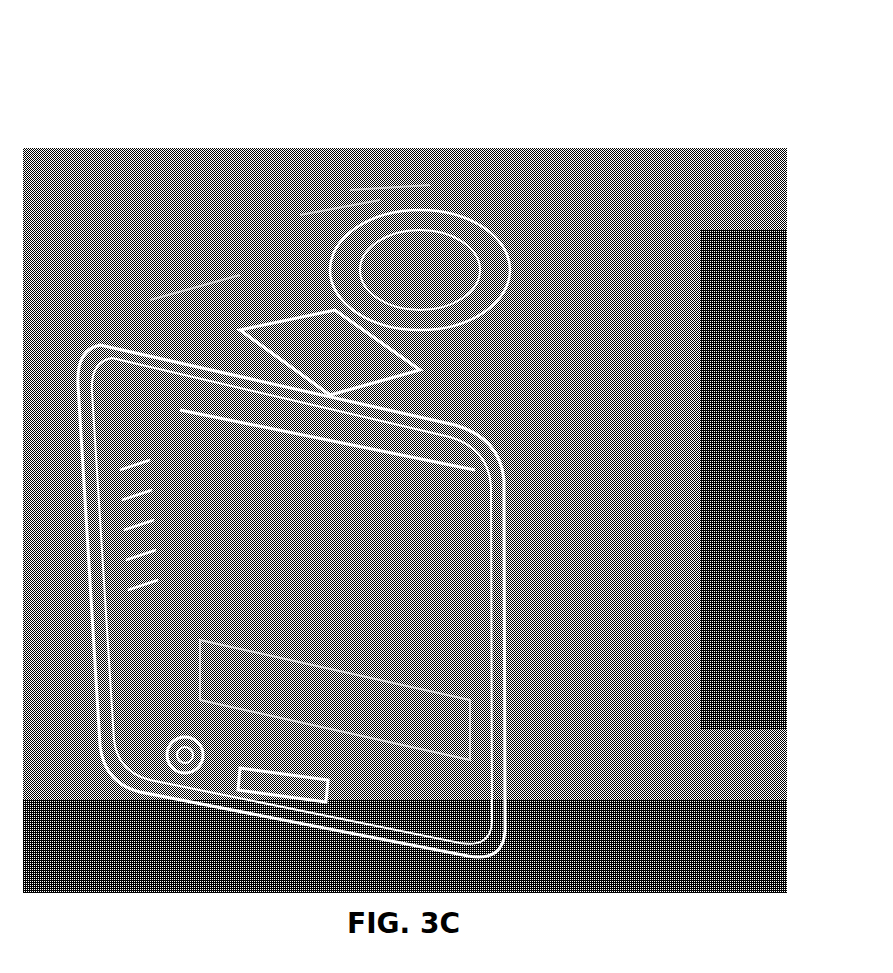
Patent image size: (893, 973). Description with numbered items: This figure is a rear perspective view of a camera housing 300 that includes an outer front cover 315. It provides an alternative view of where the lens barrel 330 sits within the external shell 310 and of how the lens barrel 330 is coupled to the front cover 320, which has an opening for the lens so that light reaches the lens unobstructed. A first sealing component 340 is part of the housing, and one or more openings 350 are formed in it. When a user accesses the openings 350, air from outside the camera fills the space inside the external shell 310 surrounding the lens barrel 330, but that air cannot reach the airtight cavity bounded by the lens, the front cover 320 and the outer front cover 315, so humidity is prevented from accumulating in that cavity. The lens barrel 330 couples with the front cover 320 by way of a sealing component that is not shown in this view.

The camera housing 300 is at (608, 100).
The external shell 310 is at (247, 278).
The outer front cover 315 is at (390, 183).
The front cover 320 is at (343, 197).
The lens barrel 330 is at (310, 565).
The first sealing component 340 is at (517, 277).
The openings 350 is at (155, 307).